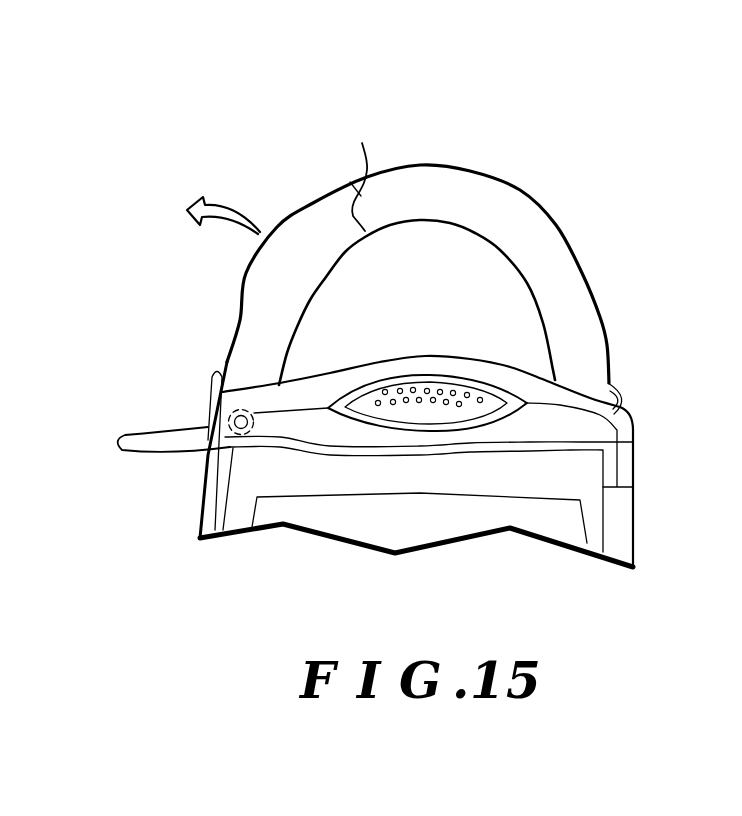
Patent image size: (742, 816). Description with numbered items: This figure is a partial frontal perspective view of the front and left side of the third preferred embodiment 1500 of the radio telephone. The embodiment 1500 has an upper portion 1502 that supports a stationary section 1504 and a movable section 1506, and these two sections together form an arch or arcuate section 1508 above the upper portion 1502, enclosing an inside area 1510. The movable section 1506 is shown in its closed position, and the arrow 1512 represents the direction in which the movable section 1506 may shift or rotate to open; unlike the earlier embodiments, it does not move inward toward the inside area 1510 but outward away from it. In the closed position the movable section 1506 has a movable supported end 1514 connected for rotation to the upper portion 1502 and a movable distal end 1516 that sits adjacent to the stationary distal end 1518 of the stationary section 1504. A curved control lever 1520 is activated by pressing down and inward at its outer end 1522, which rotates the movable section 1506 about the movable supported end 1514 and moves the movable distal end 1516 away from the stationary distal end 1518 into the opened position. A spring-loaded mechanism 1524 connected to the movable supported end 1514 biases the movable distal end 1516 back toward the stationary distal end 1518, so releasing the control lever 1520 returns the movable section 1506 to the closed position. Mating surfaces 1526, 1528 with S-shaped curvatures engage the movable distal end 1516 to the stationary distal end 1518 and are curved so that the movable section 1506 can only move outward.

The third preferred embodiment 1500 is at (297, 92).
The upper portion 1502 is at (652, 514).
The stationary section 1504 is at (522, 186).
The movable section 1506 is at (293, 210).
The arcuate section 1508 is at (204, 318).
The inside area 1510 is at (451, 345).
The arrow 1512 is at (195, 204).
The movable supported end 1514 is at (238, 416).
The movable distal end 1516 is at (345, 201).
The stationary distal end 1518 is at (370, 197).
The control lever 1520 is at (155, 447).
The outer end 1522 is at (120, 441).
The spring-loaded mechanism 1524 is at (228, 422).
The mating surface 1526 is at (356, 221).
The mating surface 1528 is at (359, 173).